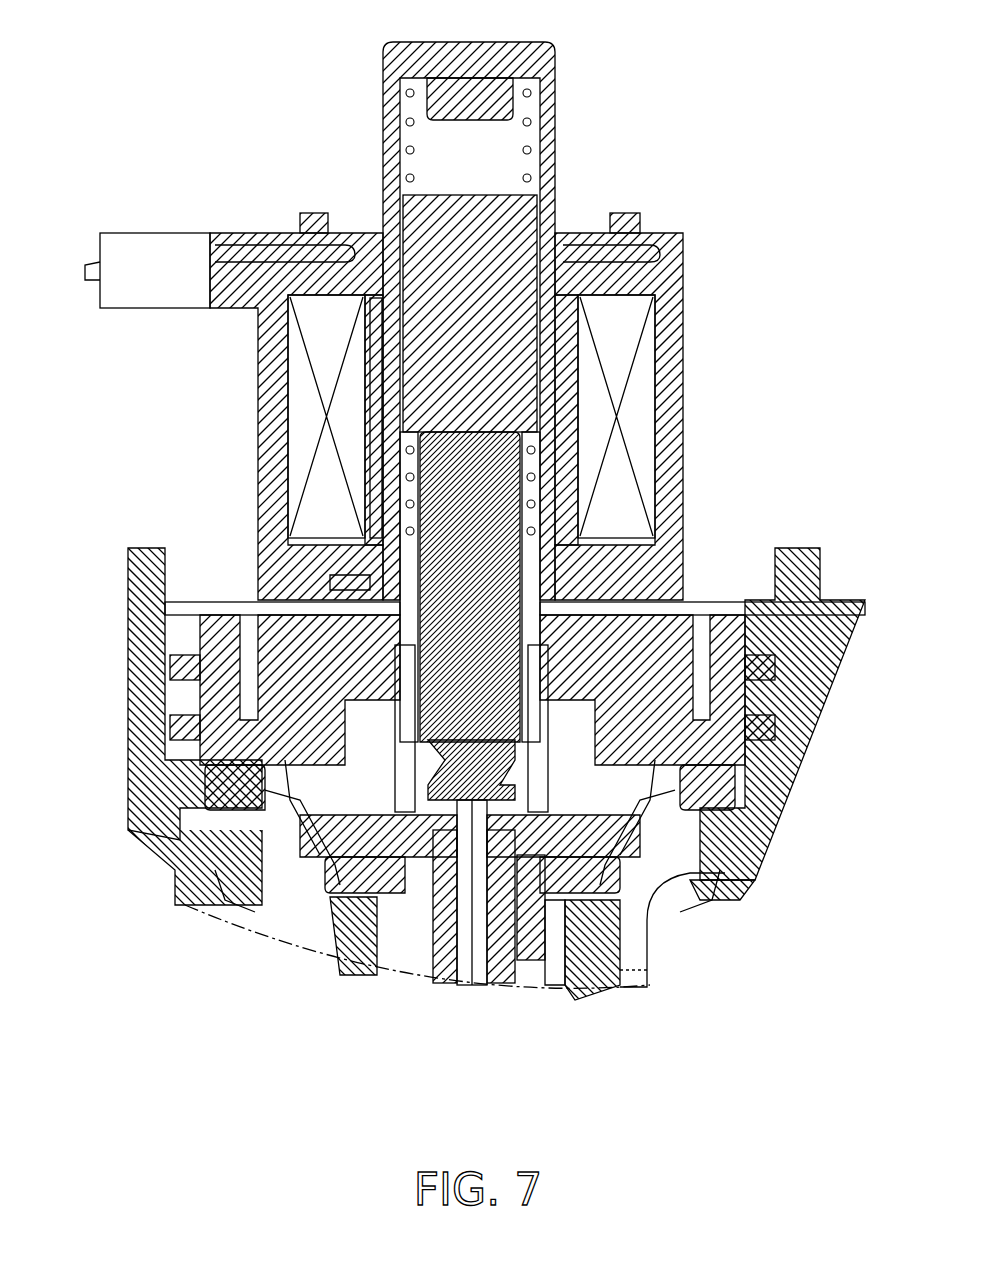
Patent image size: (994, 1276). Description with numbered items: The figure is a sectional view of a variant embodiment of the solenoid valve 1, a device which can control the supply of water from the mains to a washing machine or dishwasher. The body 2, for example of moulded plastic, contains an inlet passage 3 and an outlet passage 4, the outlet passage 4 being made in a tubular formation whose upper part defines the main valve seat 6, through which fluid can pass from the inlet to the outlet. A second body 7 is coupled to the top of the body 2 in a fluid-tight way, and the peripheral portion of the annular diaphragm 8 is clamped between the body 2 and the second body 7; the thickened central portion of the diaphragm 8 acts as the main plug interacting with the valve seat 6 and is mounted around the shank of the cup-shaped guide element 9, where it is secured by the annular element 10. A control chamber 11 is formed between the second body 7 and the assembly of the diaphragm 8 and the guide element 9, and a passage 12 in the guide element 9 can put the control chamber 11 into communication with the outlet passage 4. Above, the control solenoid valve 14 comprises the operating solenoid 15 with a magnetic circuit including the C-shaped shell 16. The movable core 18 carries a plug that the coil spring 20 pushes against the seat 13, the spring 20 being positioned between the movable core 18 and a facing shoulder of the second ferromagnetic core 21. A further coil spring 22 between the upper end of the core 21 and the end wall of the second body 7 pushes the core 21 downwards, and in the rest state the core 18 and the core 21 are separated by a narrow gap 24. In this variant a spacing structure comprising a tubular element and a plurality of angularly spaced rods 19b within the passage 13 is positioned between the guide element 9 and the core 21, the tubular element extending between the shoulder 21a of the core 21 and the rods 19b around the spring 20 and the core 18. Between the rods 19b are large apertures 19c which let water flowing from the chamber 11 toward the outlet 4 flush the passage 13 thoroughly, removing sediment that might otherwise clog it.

The solenoid valve 1 is at (225, 160).
The body 2 is at (775, 800).
The inlet passage 3 is at (705, 852).
The outlet passage 4 is at (548, 970).
The main valve seat 6 is at (360, 895).
The second body 7 is at (280, 640).
The annular diaphragm 8 is at (630, 866).
The guide element 9 is at (240, 785).
The annular element 10 is at (380, 945).
The control chamber 11 is at (615, 722).
The passage 12 is at (470, 820).
The passage 13 is at (462, 1000).
The control solenoid valve 14 is at (212, 448).
The operating solenoid 15 is at (300, 432).
The C-shaped shell 16 is at (365, 225).
The movable core 18 is at (460, 550).
The rods 19b is at (400, 720).
The apertures 19c is at (705, 820).
The coil spring 20 is at (538, 497).
The second ferromagnetic core 21 is at (485, 250).
The shoulder 21a is at (372, 360).
The coil spring 22 is at (392, 118).
The gap 24 is at (640, 350).